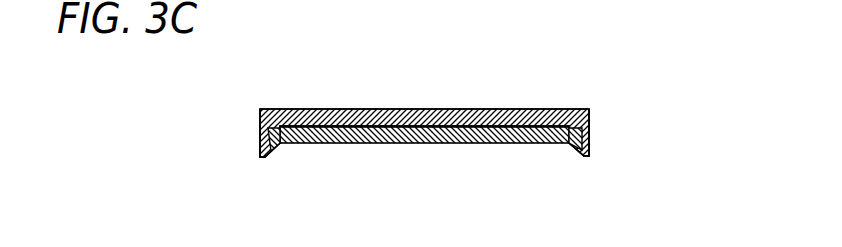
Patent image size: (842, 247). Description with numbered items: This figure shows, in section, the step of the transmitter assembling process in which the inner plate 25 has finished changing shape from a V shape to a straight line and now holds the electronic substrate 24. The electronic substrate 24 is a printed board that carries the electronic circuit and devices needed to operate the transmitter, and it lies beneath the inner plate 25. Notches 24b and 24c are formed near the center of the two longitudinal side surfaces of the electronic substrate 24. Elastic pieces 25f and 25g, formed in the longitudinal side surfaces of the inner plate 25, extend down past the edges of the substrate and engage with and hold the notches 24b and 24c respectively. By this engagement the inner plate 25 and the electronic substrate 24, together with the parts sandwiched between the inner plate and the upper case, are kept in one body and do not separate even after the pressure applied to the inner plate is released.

The inner plate 25 is at (498, 109).
The elastic piece 25g is at (259, 110).
The elastic piece 25f is at (589, 109).
The electronic substrate 24 is at (422, 143).
The notch 24c is at (270, 151).
The notch 24b is at (577, 152).